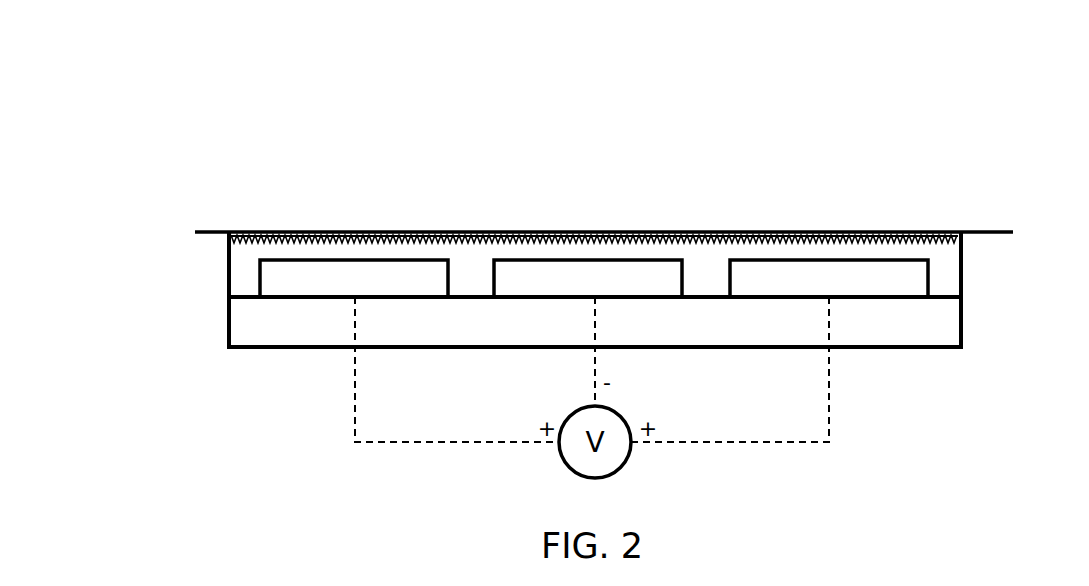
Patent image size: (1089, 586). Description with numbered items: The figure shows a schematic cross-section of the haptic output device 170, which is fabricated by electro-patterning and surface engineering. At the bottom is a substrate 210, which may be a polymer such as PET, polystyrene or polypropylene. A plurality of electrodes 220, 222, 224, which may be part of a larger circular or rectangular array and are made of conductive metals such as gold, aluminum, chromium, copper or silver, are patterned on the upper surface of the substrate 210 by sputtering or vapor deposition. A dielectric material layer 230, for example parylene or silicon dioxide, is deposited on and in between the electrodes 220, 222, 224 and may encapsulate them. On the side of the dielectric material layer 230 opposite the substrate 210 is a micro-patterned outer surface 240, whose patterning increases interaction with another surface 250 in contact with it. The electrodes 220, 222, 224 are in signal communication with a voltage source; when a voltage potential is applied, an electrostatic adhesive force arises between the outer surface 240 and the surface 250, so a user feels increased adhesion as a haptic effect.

The haptic output device 170 is at (228, 111).
The substrate 210 is at (227, 320).
The electrode 220 is at (393, 283).
The electrode 222 is at (610, 282).
The electrode 224 is at (872, 282).
The dielectric material layer 230 is at (227, 272).
The micro-patterned outer surface 240 is at (733, 232).
The surface 250 is at (985, 233).